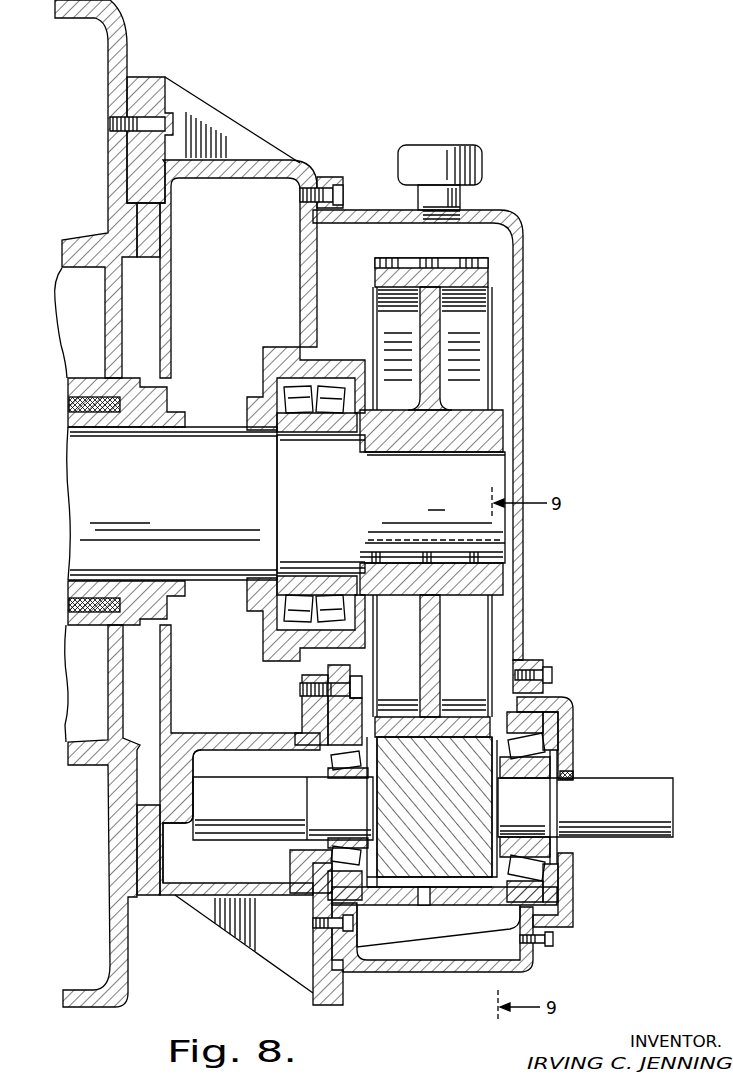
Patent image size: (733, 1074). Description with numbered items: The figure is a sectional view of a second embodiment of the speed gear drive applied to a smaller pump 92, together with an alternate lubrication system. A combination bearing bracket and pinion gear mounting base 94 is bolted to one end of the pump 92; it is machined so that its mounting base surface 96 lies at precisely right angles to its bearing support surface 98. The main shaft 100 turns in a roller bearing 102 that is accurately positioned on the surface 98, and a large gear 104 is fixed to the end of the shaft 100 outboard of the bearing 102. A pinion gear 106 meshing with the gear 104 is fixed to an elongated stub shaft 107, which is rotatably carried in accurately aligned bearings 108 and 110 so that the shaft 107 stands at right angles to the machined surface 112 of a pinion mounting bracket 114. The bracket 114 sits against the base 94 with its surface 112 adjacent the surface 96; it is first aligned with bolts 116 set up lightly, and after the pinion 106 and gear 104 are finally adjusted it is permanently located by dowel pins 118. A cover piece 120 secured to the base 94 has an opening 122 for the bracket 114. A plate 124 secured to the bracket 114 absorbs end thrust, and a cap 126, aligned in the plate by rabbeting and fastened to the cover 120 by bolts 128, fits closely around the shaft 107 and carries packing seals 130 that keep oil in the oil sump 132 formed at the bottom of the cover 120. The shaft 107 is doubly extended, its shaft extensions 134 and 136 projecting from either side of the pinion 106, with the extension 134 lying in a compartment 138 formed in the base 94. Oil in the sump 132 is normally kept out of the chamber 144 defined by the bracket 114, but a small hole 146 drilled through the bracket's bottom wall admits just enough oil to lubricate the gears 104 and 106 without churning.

The pump 92 is at (72, 232).
The combination bearing bracket and pinion gear mounting base 94 is at (300, 318).
The mounting base surface 96 is at (318, 718).
The bearing support surface 98 is at (322, 388).
The main shaft 100 is at (90, 465).
The roller bearing 102 is at (315, 430).
The large gear 104 is at (480, 280).
The pinion gear 106 is at (452, 750).
The stub shaft 107 is at (692, 768).
The bearing 108 is at (346, 774).
The bearing 110 is at (516, 760).
The machined surface 112 is at (340, 712).
The pinion mounting bracket 114 is at (373, 903).
The bolts 116 is at (349, 688).
The dowel pins 118 is at (313, 922).
The cover piece 120 is at (520, 318).
The opening 122 is at (530, 702).
The plate 124 is at (562, 890).
The cap 126 is at (570, 774).
The bolts 128 is at (548, 678).
The packing seals 130 is at (553, 830).
The oil sump 132 is at (520, 953).
The shaft extension 134 is at (245, 810).
The shaft extension 136 is at (635, 810).
The compartment 138 is at (210, 755).
The chamber 144 is at (455, 893).
The hole 146 is at (425, 905).